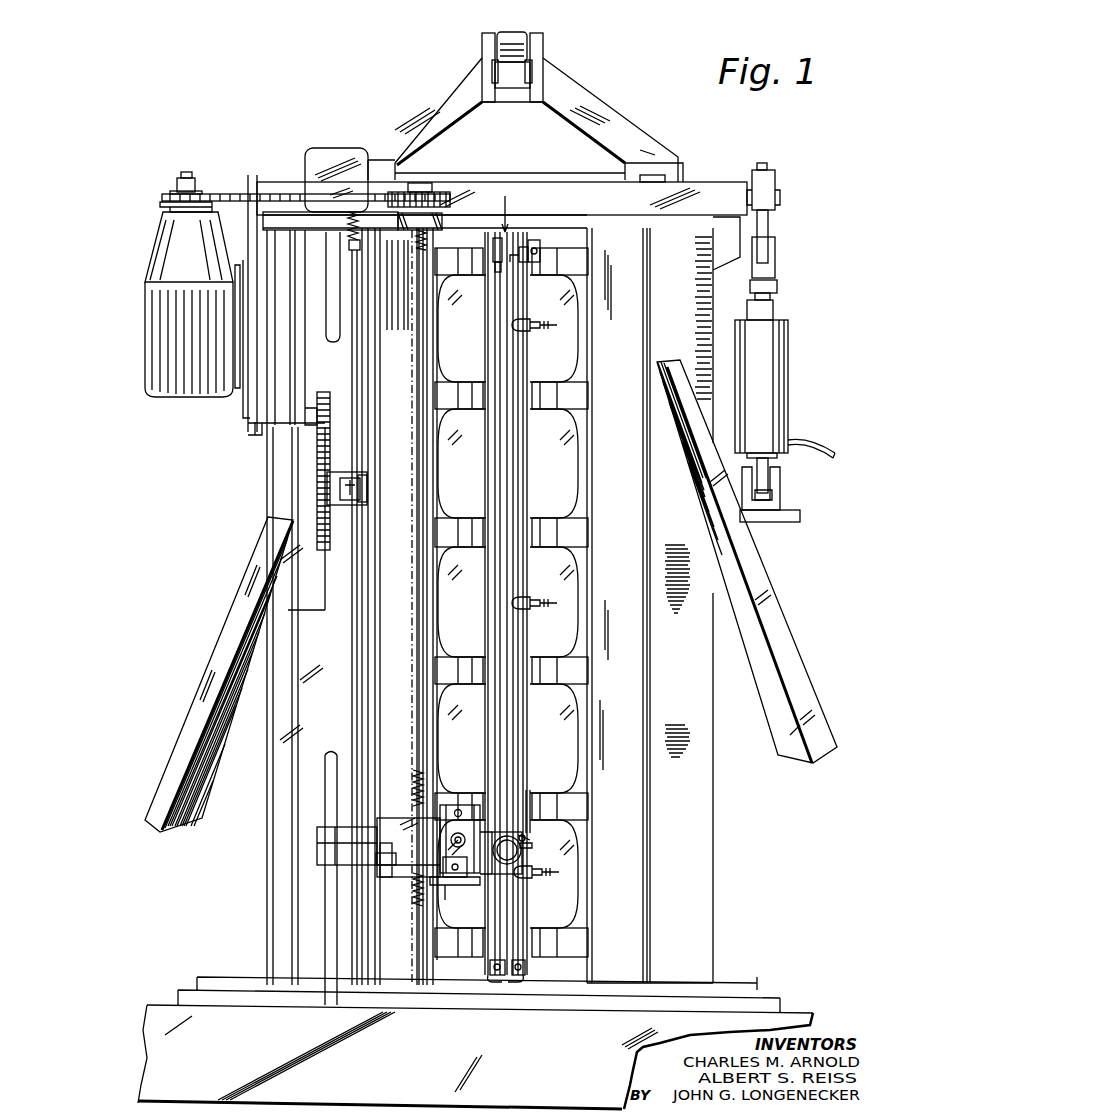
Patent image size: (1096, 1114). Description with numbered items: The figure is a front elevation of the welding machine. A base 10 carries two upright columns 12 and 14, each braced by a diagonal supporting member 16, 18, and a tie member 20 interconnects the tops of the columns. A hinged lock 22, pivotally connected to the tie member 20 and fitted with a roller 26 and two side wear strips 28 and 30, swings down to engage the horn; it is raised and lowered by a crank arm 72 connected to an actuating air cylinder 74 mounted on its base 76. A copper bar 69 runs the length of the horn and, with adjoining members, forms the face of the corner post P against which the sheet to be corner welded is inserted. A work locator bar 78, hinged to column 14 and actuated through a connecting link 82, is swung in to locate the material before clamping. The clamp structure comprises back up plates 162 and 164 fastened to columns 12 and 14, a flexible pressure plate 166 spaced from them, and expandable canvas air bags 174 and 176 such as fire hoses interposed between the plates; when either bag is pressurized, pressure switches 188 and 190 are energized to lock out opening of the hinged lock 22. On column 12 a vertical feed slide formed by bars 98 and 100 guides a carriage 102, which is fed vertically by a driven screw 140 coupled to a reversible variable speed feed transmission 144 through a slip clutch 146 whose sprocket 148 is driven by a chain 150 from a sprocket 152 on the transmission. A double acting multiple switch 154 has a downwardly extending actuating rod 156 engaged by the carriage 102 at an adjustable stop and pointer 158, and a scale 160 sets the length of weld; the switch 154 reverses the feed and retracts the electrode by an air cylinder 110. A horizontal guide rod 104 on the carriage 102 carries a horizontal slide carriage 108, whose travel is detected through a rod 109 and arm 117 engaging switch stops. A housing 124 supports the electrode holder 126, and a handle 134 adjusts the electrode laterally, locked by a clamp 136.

The base 10 is at (434, 1071).
The upright column 12 is at (368, 626).
The upright column 14 is at (712, 800).
The diagonal supporting member 16 is at (215, 660).
The diagonal supporting member 18 is at (782, 637).
The tie member 20 is at (680, 182).
The hinged lock 22 is at (608, 89).
The roller 26 is at (516, 32).
The side wear strip 28 is at (492, 74).
The side wear strip 30 is at (530, 72).
The copper bar 69 is at (524, 247).
The crank arm 72 is at (776, 182).
The actuating air cylinder 74 is at (782, 375).
The base 76 is at (778, 483).
The work locator bar 78 is at (515, 470).
The connecting link 82 is at (560, 320).
The bar 98 is at (330, 272).
The bar 100 is at (426, 328).
The carriage 102 is at (398, 802).
The rod 104 is at (462, 806).
The horizontal slide carriage 108 is at (460, 809).
The rod 109 is at (450, 838).
The air cylinder 110 is at (450, 888).
The arm 117 is at (412, 860).
The housing 124 is at (478, 885).
The electrode holder 126 is at (526, 856).
The handle 134 is at (532, 840).
The clamp 136 is at (526, 830).
The screw 140 is at (420, 250).
The feed transmission 144 is at (222, 153).
The slip clutch 146 is at (444, 220).
The sprocket 148 is at (442, 194).
The chain 150 is at (275, 193).
The sprocket 152 is at (196, 186).
The double acting multiple switch 154 is at (330, 148).
The actuating rod 156 is at (352, 404).
The adjustable stop and pointer 158 is at (368, 485).
The scale 160 is at (332, 393).
The back up plate 162 is at (455, 482).
The back up plate 164 is at (565, 480).
The flexible pressure plate 166 is at (500, 424).
The air bag 174 is at (490, 352).
The air bag 176 is at (545, 262).
The pressure switch 188 is at (535, 248).
The pressure switch 190 is at (493, 242).
The corner post P is at (505, 215).